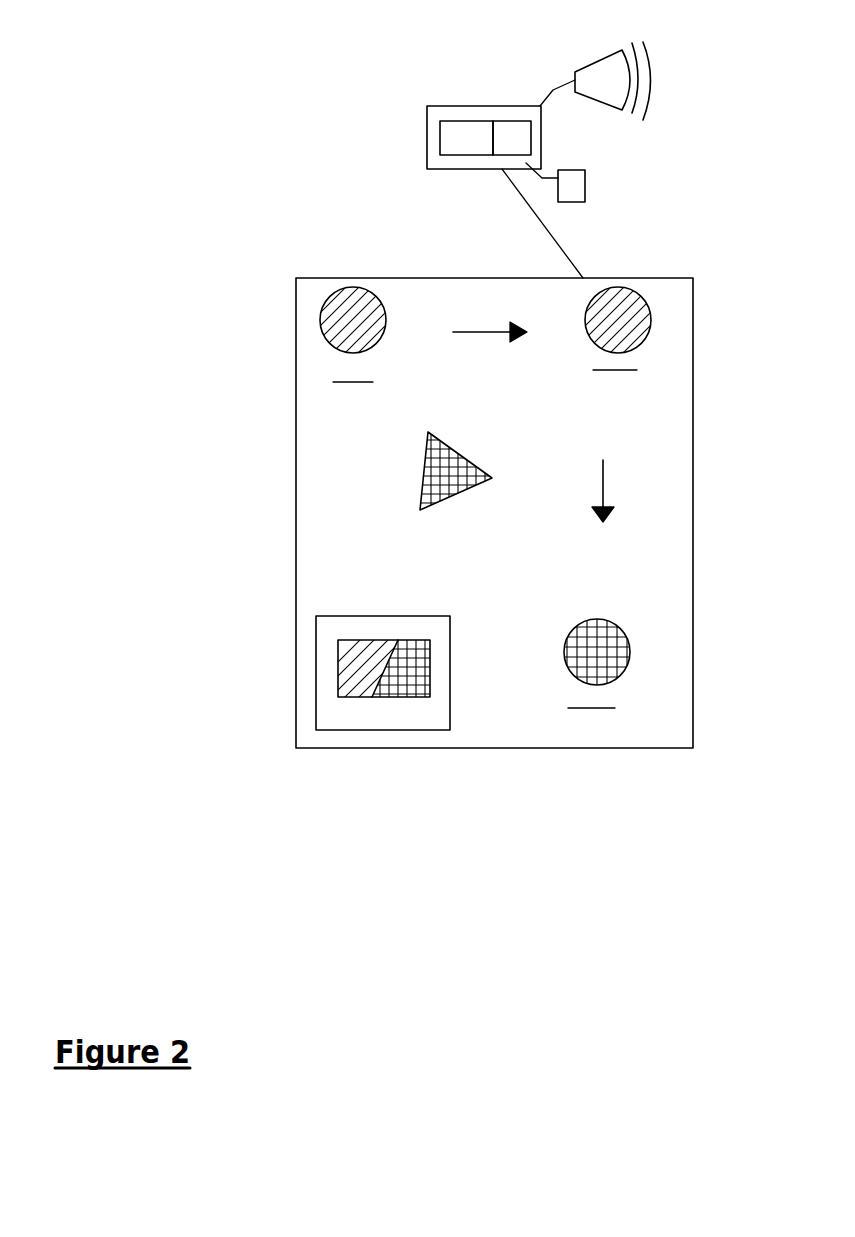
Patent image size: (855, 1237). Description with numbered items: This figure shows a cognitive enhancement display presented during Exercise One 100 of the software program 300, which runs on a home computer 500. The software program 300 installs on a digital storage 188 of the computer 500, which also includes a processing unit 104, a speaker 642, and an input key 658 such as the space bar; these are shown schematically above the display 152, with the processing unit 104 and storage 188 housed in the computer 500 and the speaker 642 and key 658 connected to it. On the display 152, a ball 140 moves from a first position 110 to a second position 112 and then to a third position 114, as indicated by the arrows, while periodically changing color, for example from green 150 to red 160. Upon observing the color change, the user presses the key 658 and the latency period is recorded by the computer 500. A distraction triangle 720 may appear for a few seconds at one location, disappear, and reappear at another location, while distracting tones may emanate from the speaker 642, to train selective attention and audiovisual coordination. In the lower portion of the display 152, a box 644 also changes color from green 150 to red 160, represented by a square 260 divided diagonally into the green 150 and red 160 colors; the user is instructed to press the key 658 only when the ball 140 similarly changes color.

The Exercise One 100 is at (756, 406).
The processing unit 104 is at (465, 163).
The first position 110 is at (356, 401).
The second position 112 is at (620, 388).
The third position 114 is at (592, 727).
The ball 140 is at (320, 302).
The green 150 is at (350, 285).
The display 152 is at (447, 513).
The red 160 is at (564, 727).
The digital storage 188 is at (429, 137).
The square 260 is at (312, 683).
The software program 300 is at (479, 112).
The computer 500 is at (727, 106).
The speaker 642 is at (595, 64).
The box 644 is at (315, 645).
The input key 658 is at (568, 180).
The distraction triangle 720 is at (333, 507).